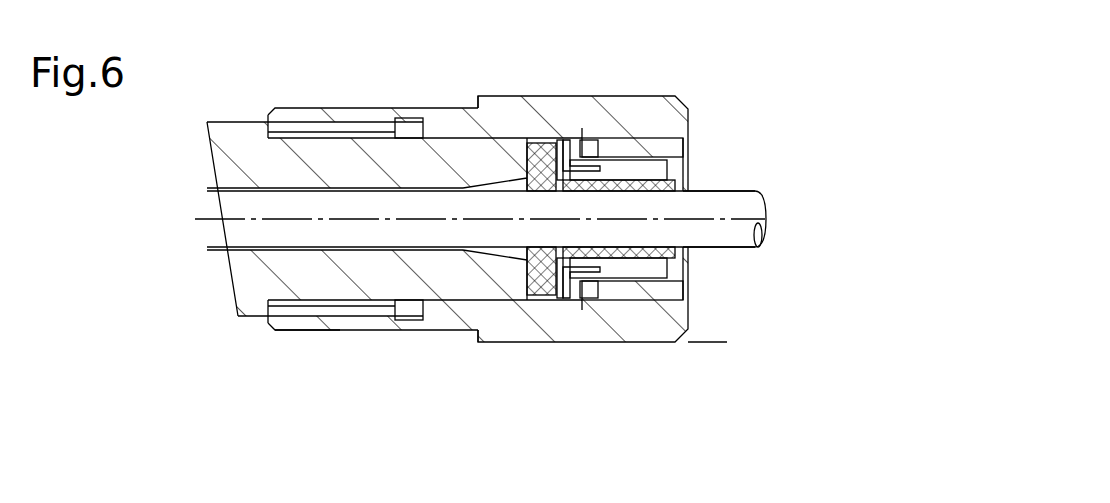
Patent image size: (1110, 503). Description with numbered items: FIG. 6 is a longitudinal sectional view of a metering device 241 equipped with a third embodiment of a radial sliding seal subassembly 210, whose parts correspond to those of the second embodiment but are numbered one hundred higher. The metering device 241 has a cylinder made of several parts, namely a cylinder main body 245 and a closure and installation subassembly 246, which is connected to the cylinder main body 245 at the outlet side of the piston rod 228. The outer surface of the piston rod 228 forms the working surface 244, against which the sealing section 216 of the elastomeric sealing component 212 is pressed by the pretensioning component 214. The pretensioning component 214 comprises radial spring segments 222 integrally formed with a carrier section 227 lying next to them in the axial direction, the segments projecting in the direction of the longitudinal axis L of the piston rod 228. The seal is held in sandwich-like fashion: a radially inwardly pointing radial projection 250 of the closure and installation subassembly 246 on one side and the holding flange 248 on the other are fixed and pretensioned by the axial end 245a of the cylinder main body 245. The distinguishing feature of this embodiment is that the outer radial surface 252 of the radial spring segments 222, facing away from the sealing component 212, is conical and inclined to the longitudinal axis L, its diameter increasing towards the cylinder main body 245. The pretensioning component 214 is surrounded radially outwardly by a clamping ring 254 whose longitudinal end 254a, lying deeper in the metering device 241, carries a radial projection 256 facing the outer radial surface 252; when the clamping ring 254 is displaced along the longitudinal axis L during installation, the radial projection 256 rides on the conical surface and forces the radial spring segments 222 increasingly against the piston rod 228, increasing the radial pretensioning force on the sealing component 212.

The radial sliding seal subassembly 210 is at (727, 343).
The sealing component 212 is at (478, 95).
The pretensioning component 214 is at (683, 272).
The sealing section 216 is at (657, 263).
The radial spring segments 222 is at (620, 273).
The carrier section 227 is at (573, 191).
The piston rod 228 is at (742, 235).
The metering device 241 is at (338, 353).
The working surface 244 is at (747, 190).
The cylinder main body 245 is at (232, 147).
The axial end 245a is at (470, 162).
The closure and installation subassembly 246 is at (531, 110).
The holding flange 248 is at (527, 296).
The radial projection 250 is at (577, 302).
The outer radial surface 252 is at (618, 268).
The clamping ring 254 is at (667, 147).
The longitudinal end 254a is at (594, 125).
The radial projection 256 is at (600, 142).
The longitudinal axis L is at (203, 220).